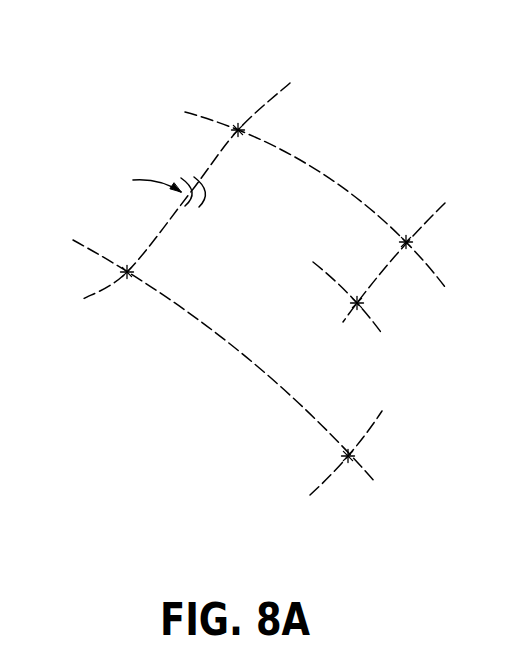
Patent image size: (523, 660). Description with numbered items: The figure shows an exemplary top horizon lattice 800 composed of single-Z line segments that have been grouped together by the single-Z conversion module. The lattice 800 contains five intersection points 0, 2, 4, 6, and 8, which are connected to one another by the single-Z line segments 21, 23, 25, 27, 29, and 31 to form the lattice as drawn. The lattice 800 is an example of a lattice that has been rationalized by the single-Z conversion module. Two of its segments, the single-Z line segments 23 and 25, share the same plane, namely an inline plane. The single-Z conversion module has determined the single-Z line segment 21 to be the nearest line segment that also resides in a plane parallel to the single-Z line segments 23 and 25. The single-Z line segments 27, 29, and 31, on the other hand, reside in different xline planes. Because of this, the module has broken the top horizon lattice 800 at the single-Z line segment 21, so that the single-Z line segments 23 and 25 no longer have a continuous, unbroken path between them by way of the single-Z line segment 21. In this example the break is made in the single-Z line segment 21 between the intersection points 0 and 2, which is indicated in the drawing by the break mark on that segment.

The top horizon lattice 800 is at (125, 42).
The single-Z line segment 21 is at (292, 55).
The single-Z line segment 23 is at (440, 203).
The single-Z line segment 25 is at (311, 496).
The single-Z line segment 27 is at (196, 109).
The single-Z line segment 29 is at (313, 264).
The single-Z line segment 31 is at (73, 241).
The intersection point 0 is at (238, 116).
The intersection point 2 is at (127, 258).
The intersection point 4 is at (406, 228).
The intersection point 6 is at (357, 288).
The intersection point 8 is at (348, 442).